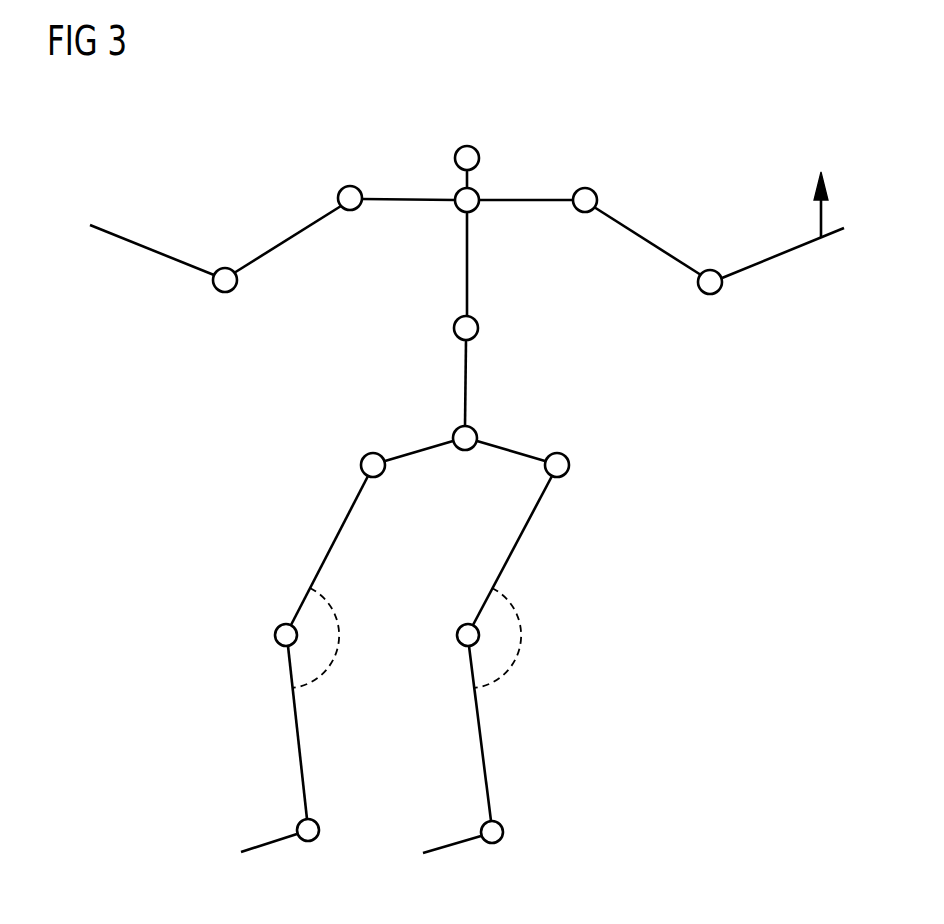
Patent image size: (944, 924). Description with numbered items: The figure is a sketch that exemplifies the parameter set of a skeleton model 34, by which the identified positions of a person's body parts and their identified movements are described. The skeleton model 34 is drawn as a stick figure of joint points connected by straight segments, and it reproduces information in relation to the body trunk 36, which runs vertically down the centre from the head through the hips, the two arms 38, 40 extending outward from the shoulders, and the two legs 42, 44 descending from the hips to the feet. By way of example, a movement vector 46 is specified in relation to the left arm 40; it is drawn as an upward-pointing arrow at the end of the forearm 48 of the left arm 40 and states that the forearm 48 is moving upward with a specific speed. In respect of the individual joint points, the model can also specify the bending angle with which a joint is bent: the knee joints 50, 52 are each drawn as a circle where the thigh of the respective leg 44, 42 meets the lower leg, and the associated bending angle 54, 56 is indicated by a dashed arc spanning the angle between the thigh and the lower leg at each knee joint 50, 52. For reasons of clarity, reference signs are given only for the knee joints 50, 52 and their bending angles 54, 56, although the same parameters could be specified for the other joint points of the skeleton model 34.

The skeleton model 34 is at (467, 499).
The body trunk 36 is at (421, 325).
The arm 38 is at (138, 240).
The left arm 40 is at (645, 244).
The leg 42 is at (518, 543).
The leg 44 is at (335, 542).
The movement vector 46 is at (818, 206).
The forearm 48 is at (782, 254).
The knee joint 50 is at (275, 633).
The knee joint 52 is at (457, 632).
The bending angle 54 is at (327, 662).
The bending angle 56 is at (512, 653).